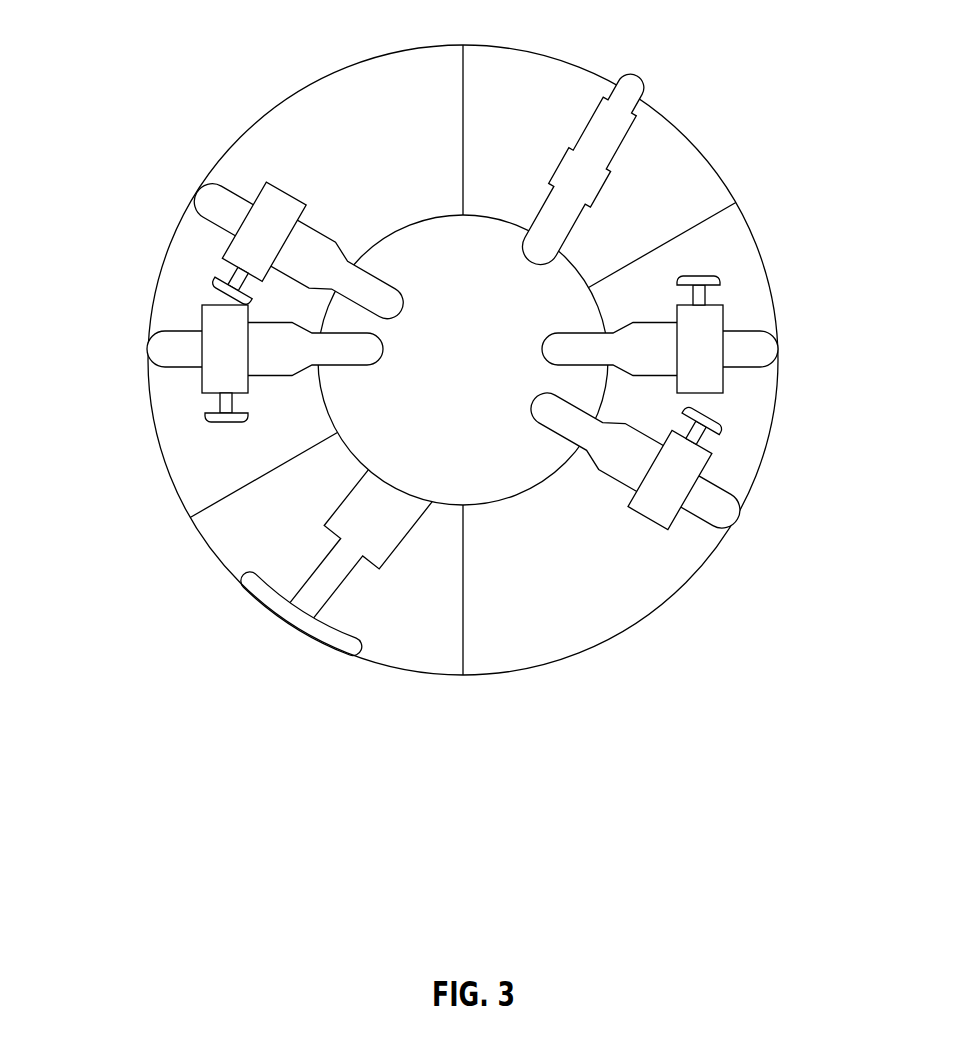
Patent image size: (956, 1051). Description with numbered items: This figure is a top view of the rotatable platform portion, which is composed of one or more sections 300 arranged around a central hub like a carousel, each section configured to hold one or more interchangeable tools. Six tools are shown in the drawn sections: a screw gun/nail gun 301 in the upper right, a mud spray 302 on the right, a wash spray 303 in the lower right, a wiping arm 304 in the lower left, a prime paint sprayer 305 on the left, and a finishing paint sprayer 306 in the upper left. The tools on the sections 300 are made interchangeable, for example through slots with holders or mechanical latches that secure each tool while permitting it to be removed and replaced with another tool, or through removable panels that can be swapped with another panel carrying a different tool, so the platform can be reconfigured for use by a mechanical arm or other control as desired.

The sections 300 is at (311, 75).
The screw gun/nail gun 301 is at (646, 72).
The mud spray 302 is at (776, 340).
The wash spray 303 is at (746, 509).
The wiping arm 304 is at (252, 616).
The prime paint sprayer 305 is at (135, 341).
The finishing paint sprayer 306 is at (192, 183).